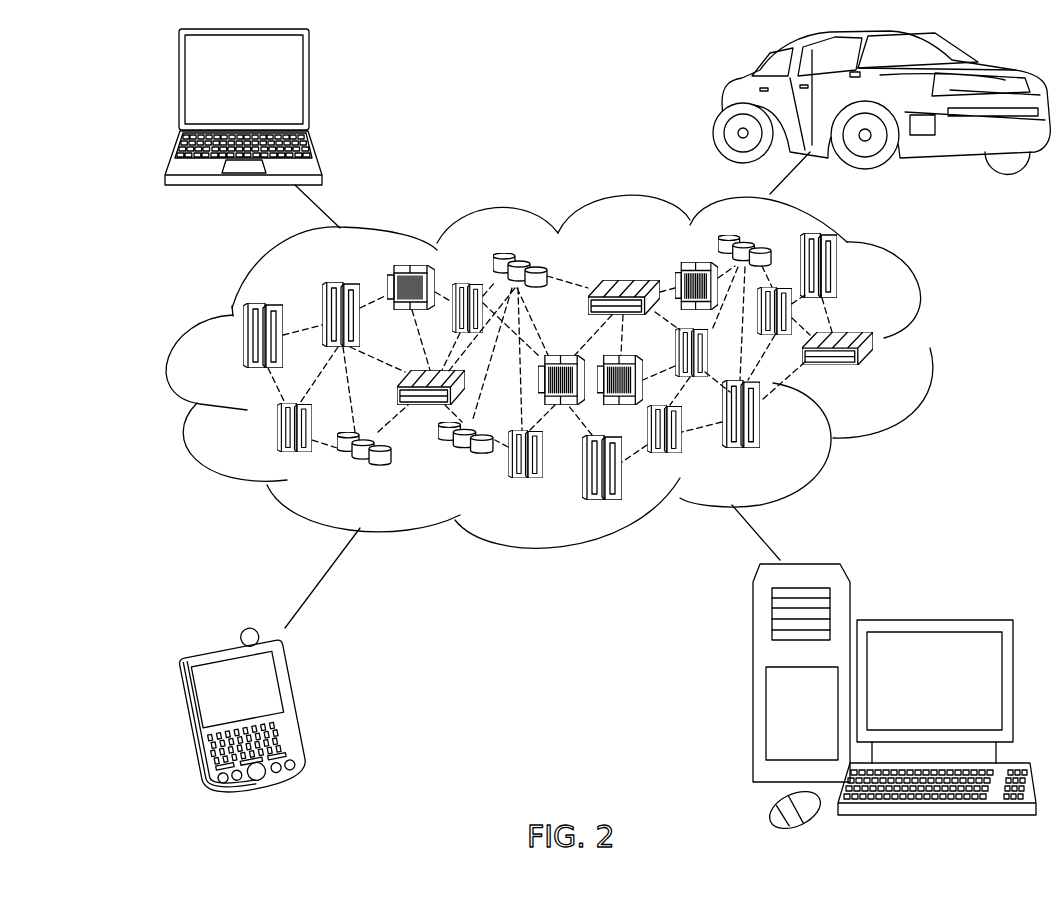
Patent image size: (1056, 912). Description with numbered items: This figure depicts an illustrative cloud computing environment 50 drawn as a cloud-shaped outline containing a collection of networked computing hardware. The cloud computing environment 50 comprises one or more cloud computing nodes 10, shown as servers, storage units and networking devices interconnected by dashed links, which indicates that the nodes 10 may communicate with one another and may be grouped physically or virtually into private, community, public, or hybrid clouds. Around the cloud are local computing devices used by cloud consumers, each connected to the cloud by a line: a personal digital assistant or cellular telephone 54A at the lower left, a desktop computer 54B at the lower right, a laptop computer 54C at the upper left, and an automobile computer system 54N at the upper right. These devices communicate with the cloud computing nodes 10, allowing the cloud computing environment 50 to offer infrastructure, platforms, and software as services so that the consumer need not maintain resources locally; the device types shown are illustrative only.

The cloud computing node 10 is at (880, 376).
The cloud computing environment 50 is at (933, 348).
The personal digital assistant or cellular telephone 54A is at (300, 706).
The desktop computer 54B is at (934, 620).
The laptop computer 54C is at (309, 88).
The automobile computer system 54N is at (722, 102).